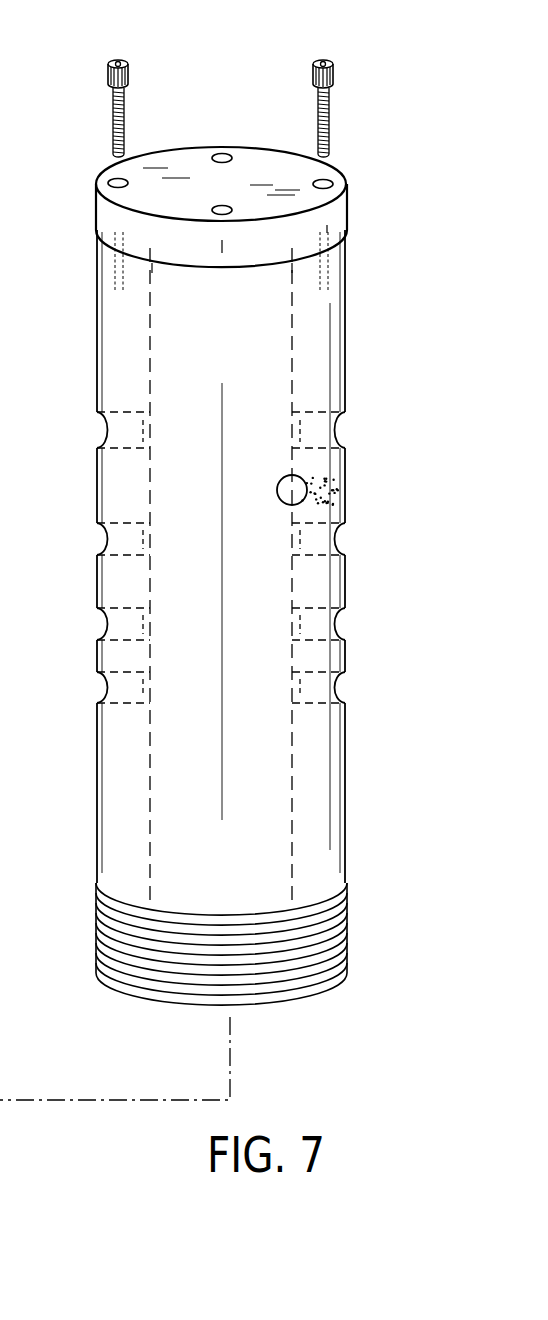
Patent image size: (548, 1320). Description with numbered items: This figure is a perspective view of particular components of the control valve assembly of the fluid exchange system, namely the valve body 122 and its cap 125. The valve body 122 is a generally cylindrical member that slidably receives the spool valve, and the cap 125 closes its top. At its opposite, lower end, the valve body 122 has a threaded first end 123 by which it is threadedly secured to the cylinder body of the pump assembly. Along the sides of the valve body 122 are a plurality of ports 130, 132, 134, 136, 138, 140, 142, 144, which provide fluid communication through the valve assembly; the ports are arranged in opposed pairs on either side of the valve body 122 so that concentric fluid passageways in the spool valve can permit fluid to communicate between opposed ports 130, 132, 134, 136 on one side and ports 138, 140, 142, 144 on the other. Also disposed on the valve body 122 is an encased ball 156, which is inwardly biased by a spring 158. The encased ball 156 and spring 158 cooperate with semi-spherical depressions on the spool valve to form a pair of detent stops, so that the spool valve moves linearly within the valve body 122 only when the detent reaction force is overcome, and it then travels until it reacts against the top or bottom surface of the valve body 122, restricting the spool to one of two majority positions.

The valve body 122 is at (337, 318).
The first end 123 is at (345, 912).
The cap 125 is at (243, 181).
The port 130 is at (338, 427).
The port 132 is at (338, 537).
The port 134 is at (338, 623).
The port 136 is at (338, 688).
The port 138 is at (104, 430).
The port 140 is at (104, 540).
The port 142 is at (104, 624).
The port 144 is at (104, 688).
The encased ball 156 is at (304, 481).
The spring 158 is at (338, 491).